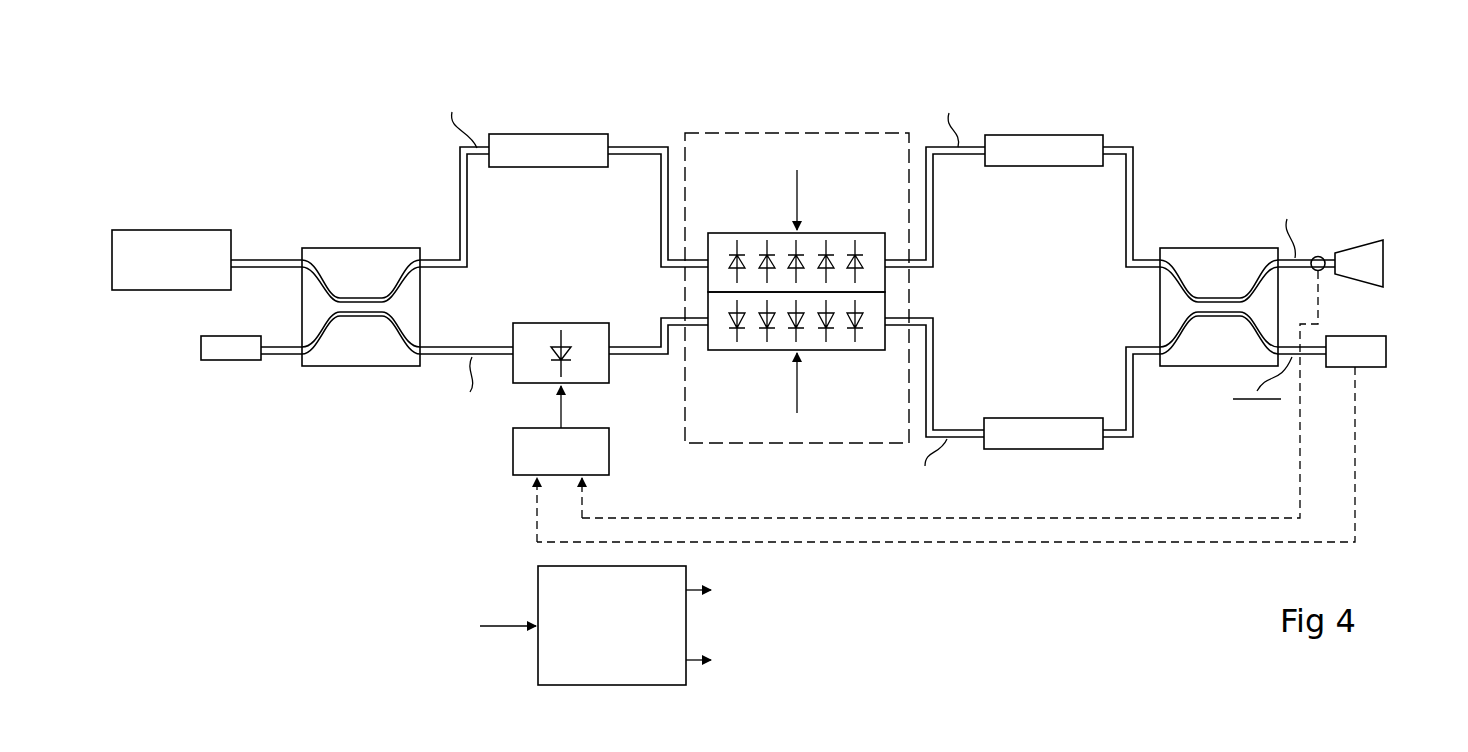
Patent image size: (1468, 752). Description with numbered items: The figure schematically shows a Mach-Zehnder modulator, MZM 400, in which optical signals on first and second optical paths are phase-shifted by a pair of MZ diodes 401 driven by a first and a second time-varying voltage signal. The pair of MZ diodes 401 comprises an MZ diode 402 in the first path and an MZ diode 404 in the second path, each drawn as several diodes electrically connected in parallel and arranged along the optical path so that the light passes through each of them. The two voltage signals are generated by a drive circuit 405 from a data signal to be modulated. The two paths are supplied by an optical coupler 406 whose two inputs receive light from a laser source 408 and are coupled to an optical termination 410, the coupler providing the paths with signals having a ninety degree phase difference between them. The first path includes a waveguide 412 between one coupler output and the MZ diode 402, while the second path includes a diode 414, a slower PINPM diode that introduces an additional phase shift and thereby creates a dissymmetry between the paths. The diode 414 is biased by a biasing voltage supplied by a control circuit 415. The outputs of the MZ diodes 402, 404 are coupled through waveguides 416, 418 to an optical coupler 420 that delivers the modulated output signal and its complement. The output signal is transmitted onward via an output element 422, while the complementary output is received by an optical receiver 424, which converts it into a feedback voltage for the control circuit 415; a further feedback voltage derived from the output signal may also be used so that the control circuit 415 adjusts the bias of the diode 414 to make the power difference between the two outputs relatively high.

The MZM 400 is at (1275, 76).
The pair of MZ diodes 401 is at (797, 261).
The MZ diode 402 is at (839, 238).
The MZ diode 404 is at (871, 338).
The drive circuit 405 is at (625, 679).
The optical coupler 406 is at (382, 257).
The laser source 408 is at (165, 237).
The optical termination 410 is at (227, 356).
The waveguide 412 is at (553, 146).
The diode 414 is at (533, 332).
The control circuit 415 is at (609, 463).
The waveguide 416 is at (1057, 147).
The waveguide 418 is at (1038, 443).
The optical coupler 420 is at (1210, 248).
The output element 422 is at (1365, 255).
The optical receiver 424 is at (1377, 353).